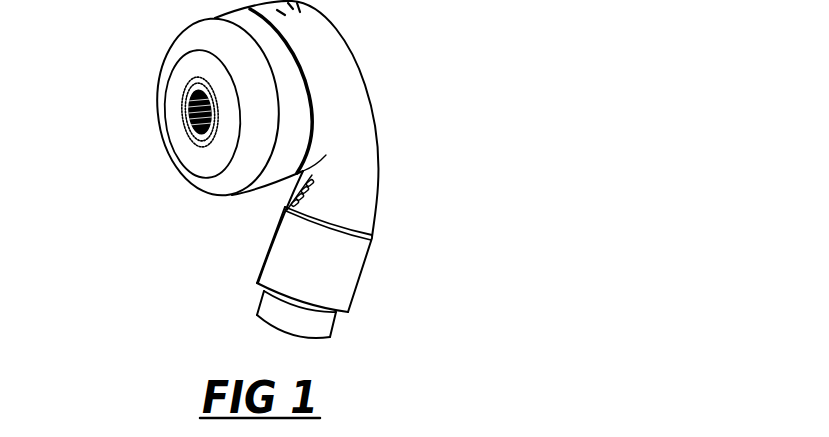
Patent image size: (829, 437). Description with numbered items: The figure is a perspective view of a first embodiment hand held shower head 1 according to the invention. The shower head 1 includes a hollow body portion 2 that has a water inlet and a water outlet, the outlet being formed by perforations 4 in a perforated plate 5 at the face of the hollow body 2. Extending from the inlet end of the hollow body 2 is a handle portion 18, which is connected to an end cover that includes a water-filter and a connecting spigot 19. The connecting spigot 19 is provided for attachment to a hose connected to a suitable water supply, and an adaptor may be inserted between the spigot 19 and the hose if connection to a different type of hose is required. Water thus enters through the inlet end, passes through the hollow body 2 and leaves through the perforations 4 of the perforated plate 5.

The hand held shower head 1 is at (400, 91).
The hollow body portion 2 is at (312, 55).
The perforations 4 is at (187, 82).
The perforated plate 5 is at (198, 168).
The handle portion 18 is at (413, 190).
The connecting spigot 19 is at (393, 294).